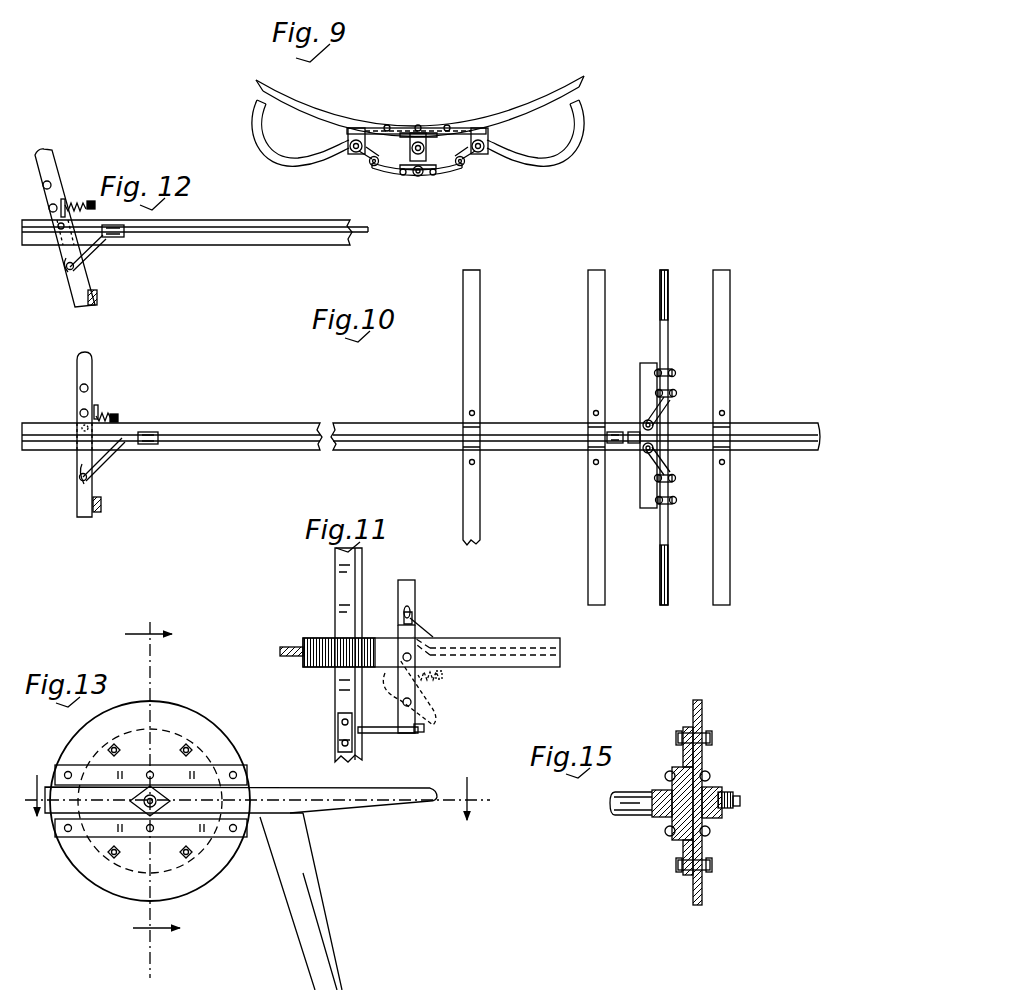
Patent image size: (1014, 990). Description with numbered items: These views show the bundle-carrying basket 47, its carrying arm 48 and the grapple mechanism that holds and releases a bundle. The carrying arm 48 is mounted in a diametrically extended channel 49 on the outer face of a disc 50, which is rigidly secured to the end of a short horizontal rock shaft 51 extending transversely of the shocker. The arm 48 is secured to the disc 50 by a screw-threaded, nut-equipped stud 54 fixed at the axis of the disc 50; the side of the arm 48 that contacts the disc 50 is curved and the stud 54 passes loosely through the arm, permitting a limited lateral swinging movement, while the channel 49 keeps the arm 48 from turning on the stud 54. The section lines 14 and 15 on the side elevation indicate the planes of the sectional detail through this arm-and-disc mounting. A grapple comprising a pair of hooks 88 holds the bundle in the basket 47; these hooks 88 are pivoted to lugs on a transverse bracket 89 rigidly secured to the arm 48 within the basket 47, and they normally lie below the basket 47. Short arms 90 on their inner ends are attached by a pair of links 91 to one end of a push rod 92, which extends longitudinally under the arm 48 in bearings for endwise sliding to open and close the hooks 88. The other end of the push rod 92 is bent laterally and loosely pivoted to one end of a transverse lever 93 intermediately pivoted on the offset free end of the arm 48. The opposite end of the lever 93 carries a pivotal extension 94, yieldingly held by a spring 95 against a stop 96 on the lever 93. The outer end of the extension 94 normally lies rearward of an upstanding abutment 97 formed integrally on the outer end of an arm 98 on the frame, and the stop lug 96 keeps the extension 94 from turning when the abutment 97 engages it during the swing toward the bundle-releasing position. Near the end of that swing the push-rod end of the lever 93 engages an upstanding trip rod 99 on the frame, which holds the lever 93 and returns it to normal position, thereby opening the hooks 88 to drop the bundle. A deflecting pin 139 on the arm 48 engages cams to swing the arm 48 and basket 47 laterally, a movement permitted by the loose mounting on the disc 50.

In FIG. 13, the section line 14- 14 is at (268, 787).
In FIG. 13, the section line 15- 15 is at (152, 789).
In FIG. 9, the basket 47 is at (298, 102).
In FIG. 10, the basket 47 is at (607, 288).
In FIG. 11, the basket 47 is at (348, 655).
In FIG. 9, the carrying arm 48 is at (416, 135).
In FIG. 12, the carrying arm 48 is at (212, 242).
In FIG. 10, the carrying arm 48 is at (520, 448).
In FIG. 11, the carrying arm 48 is at (295, 645).
In FIG. 13, the carrying arm 48 is at (72, 805).
In FIG. 15, the carrying arm 48 is at (733, 792).
In FIG. 13, the channel 49 is at (204, 780).
In FIG. 15, the channel 49 is at (716, 786).
In FIG. 13, the disc 50 is at (202, 737).
In FIG. 15, the disc 50 is at (702, 707).
In FIG. 15, the rock shaft 51 is at (625, 808).
In FIG. 13, the screw-threaded stud 54 is at (147, 812).
In FIG. 15, the screw-threaded stud 54 is at (740, 802).
In FIG. 9, the grapple hooks 88 is at (293, 162).
In FIG. 10, the grapple hooks 88 is at (664, 298).
In FIG. 9, the transverse bracket 89 is at (487, 133).
In FIG. 10, the transverse bracket 89 is at (645, 488).
In FIG. 9, the short arms 90 is at (362, 157).
In FIG. 10, the short arms 90 is at (668, 393).
In FIG. 9, the links 91 is at (387, 166).
In FIG. 10, the links 91 is at (654, 423).
In FIG. 9, the push rod 92 is at (417, 173).
In FIG. 12, the push rod 92 is at (268, 233).
In FIG. 10, the push rod 92 is at (433, 440).
In FIG. 11, the push rod 92 is at (560, 652).
In FIG. 12, the transverse lever 93 is at (83, 272).
In FIG. 10, the transverse lever 93 is at (90, 486).
In FIG. 11, the transverse lever 93 is at (412, 595).
In FIG. 12, the pivotal extension 94 is at (47, 157).
In FIG. 10, the pivotal extension 94 is at (88, 364).
In FIG. 11, the pivotal extension 94 is at (413, 713).
In FIG. 12, the spring 95 is at (93, 205).
In FIG. 10, the spring 95 is at (113, 417).
In FIG. 11, the spring 95 is at (422, 682).
In FIG. 12, the stop 96 is at (65, 203).
In FIG. 10, the stop 96 is at (100, 414).
In FIG. 11, the stop 96 is at (440, 676).
In FIG. 11, the abutment 97 is at (413, 618).
In FIG. 11, the arm 98 is at (390, 734).
In FIG. 12, the trip rod 99 is at (97, 303).
In FIG. 10, the trip rod 99 is at (101, 510).
In FIG. 13, the deflecting pin 139 is at (338, 805).